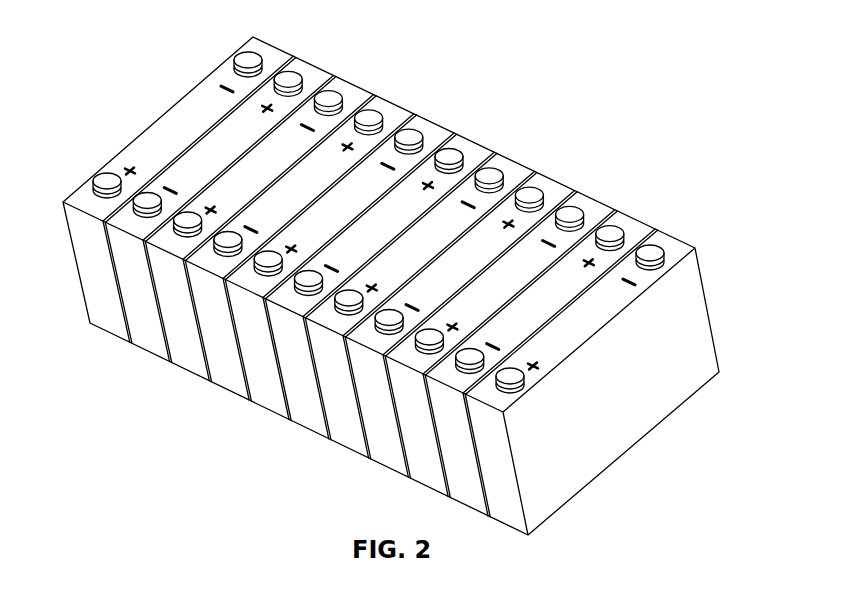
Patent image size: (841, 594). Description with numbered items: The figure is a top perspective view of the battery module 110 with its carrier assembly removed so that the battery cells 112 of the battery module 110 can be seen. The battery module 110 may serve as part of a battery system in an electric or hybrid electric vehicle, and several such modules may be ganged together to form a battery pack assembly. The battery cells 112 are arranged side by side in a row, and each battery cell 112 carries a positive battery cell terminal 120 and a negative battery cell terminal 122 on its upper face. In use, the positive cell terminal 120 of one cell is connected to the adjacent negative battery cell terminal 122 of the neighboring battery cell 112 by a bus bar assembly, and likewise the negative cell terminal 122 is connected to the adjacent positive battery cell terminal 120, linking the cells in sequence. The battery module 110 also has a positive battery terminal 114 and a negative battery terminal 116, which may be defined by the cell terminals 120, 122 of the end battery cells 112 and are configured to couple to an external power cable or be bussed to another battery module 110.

The battery module 110 is at (486, 120).
The battery cell 112 is at (592, 207).
The positive battery terminal 114 is at (105, 177).
The negative battery terminal 116 is at (648, 250).
The positive battery cell terminal 120 is at (508, 373).
The negative battery cell terminal 122 is at (467, 353).